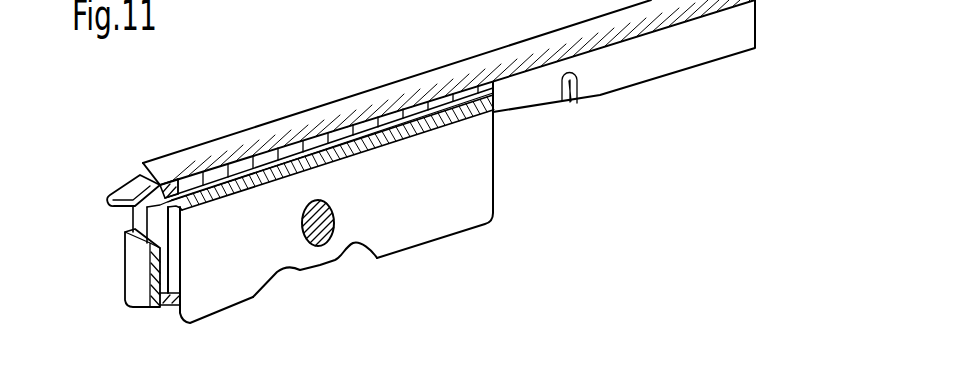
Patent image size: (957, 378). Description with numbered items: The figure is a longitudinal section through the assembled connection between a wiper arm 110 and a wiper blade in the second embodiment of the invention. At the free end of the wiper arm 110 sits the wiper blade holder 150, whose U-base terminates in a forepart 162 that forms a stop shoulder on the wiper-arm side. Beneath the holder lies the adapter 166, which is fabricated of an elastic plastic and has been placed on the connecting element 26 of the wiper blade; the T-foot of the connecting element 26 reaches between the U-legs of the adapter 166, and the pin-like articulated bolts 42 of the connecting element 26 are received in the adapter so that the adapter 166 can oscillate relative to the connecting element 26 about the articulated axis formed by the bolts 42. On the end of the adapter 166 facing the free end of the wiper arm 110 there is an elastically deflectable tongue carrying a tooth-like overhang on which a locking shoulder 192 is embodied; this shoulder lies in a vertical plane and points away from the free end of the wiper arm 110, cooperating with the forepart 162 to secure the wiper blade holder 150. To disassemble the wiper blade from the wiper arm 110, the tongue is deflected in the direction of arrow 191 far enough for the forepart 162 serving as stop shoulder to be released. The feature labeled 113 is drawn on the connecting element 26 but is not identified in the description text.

The wiper arm 110 is at (757, 17).
The wiper blade holder 150 is at (248, 126).
The adapter 166 is at (500, 91).
The locking shoulder 192 is at (164, 176).
The forepart 162 is at (140, 183).
The connecting element 26 is at (496, 168).
The bracket bottom edge bump 113 is at (298, 280).
The arrow 191 is at (105, 230).
The articulated bolts 42 is at (323, 247).